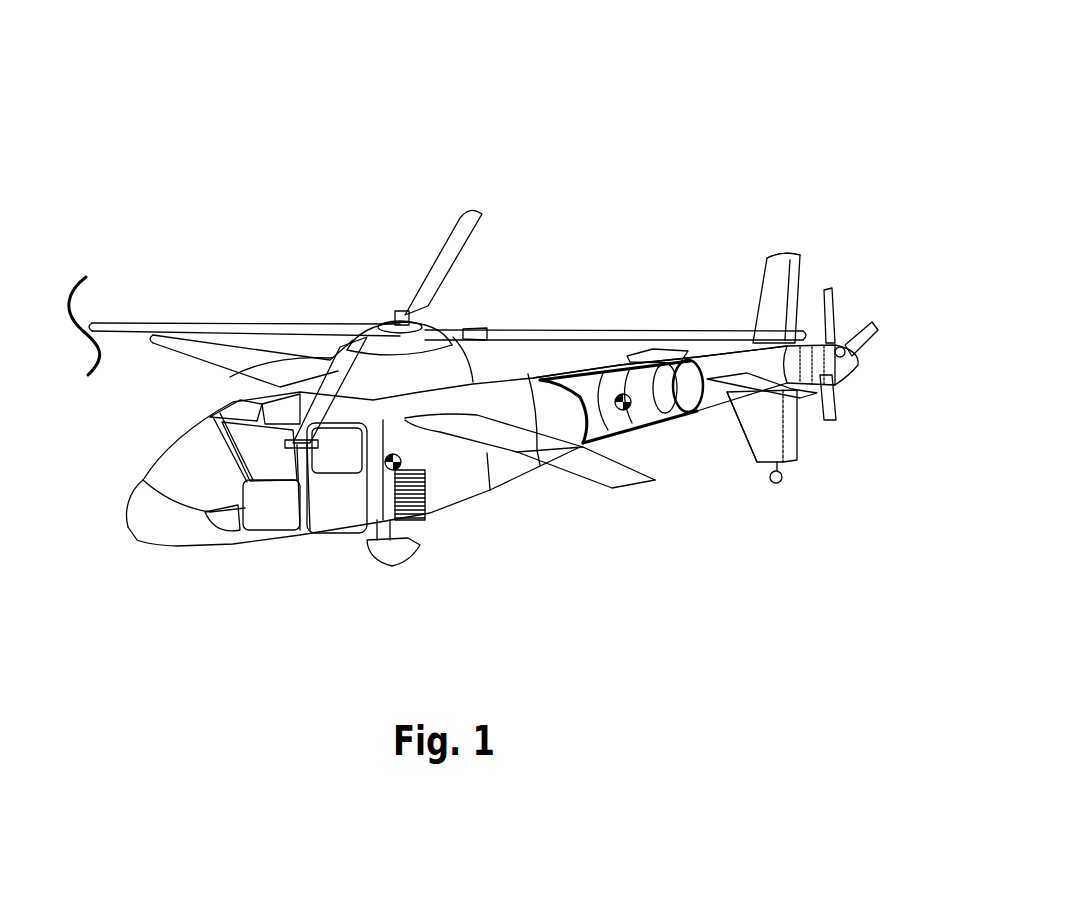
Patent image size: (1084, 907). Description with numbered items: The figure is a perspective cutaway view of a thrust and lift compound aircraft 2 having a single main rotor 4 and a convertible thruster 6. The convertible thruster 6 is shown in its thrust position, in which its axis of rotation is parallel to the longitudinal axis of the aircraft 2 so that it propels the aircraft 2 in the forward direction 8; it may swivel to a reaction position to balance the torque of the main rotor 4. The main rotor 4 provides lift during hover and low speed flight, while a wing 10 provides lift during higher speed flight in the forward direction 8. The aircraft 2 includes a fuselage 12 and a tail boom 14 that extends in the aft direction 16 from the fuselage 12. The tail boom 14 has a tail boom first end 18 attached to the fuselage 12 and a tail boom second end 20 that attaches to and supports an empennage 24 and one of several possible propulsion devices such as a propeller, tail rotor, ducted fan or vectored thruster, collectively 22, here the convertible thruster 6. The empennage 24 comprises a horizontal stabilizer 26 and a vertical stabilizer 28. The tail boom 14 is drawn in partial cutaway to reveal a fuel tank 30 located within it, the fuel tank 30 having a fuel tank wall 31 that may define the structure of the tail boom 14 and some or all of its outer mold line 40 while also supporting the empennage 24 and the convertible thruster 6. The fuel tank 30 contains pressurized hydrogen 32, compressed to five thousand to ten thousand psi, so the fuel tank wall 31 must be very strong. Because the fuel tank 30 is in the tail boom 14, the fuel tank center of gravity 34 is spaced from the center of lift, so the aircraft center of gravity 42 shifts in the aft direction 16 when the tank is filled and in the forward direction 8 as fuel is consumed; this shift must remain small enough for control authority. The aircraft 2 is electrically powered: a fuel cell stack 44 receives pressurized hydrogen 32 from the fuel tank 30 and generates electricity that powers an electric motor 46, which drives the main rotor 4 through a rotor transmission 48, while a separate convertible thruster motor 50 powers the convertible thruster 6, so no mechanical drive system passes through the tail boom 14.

The aircraft 2 is at (252, 201).
The main rotor 4 is at (130, 323).
The convertible thruster 6 is at (723, 400).
The forward direction 8 is at (125, 517).
The wing 10 is at (240, 353).
The fuselage 12 is at (297, 533).
The tail boom 14 is at (580, 370).
The aft direction 16 is at (905, 350).
The tail boom first end 18 is at (530, 387).
The tail boom second end 20 is at (738, 360).
The propeller, tail rotor, convertible thruster, ducted fan or vectored thruster 22 is at (814, 116).
The empennage 24 is at (787, 273).
The horizontal stabilizer 26 is at (668, 350).
The vertical stabilizer 28 is at (775, 310).
The fuel tank 30 is at (675, 405).
The fuel tank wall 31 is at (632, 410).
The pressurized hydrogen 32 is at (647, 402).
The fuel tank center of gravity 34 is at (627, 413).
The outer mold line 40 is at (608, 365).
The aircraft center of gravity 42 is at (390, 471).
The fuel cell stack 44 is at (447, 483).
The electric motor 46 is at (420, 403).
The rotor transmission 48 is at (415, 373).
The convertible thruster motor 50 is at (803, 360).